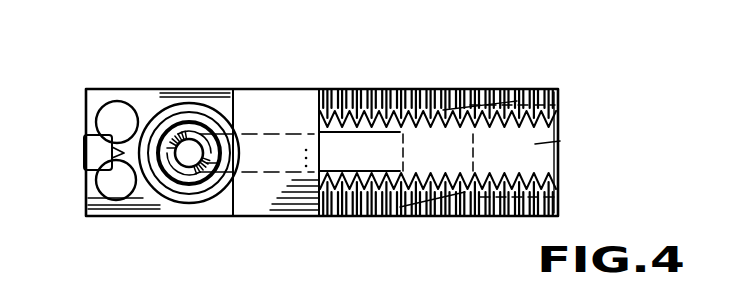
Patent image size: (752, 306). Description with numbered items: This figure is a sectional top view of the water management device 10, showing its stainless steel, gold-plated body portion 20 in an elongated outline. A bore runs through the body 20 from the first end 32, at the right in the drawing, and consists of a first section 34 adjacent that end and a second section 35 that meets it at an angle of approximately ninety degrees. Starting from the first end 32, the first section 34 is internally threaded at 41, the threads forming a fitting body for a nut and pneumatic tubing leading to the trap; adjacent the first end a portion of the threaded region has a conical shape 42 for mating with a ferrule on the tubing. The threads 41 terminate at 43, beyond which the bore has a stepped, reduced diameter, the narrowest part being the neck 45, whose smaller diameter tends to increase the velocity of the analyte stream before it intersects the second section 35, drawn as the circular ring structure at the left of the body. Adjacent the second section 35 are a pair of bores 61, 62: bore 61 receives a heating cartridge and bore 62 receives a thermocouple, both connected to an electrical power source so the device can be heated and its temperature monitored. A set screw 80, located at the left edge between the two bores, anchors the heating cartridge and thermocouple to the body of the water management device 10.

The water management device 10 is at (268, 62).
The body portion 20 is at (285, 218).
The first end 32 is at (560, 162).
The first section 34 is at (547, 139).
The second section 35 is at (190, 150).
The internally threaded portion 41 is at (488, 88).
The conical shape 42 is at (422, 218).
The thread termination 43 is at (278, 182).
The neck 45 is at (159, 182).
The bore for heating cartridge 61 is at (118, 108).
The bore for thermocouple 62 is at (112, 188).
The set screw 80 is at (86, 141).